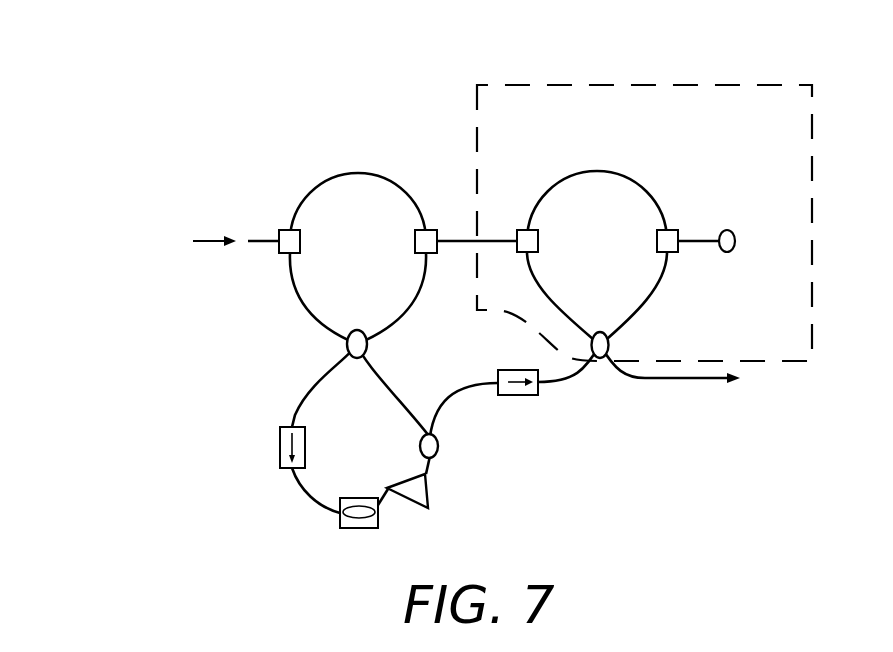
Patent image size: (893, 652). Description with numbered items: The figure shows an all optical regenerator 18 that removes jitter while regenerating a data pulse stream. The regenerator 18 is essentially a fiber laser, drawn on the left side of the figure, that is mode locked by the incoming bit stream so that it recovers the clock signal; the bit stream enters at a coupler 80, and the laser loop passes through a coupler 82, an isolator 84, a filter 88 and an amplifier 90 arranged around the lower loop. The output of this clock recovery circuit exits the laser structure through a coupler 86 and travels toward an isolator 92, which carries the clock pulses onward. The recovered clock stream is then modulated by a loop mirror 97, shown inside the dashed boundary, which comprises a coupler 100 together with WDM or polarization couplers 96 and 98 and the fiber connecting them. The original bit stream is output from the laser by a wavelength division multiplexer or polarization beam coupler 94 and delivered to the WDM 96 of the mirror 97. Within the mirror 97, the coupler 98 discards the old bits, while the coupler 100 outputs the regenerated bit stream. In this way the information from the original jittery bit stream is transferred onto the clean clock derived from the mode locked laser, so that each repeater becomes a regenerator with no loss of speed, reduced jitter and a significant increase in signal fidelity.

The all optical regenerator 18 is at (136, 386).
The input coupler 80 is at (286, 229).
The 0.5C fused fiber coupler 82 is at (347, 340).
The optical isolator 84 is at (280, 440).
The coupler 86 is at (434, 457).
The optical filter 88 is at (340, 518).
The optical amplifier 90 is at (403, 480).
The isolator 92 is at (512, 370).
The wavelength division multiplexer or polarization beam coupler 94 is at (428, 229).
The WDM coupler 96 is at (518, 230).
The loop mirror 97 is at (697, 102).
The coupler 98 is at (675, 230).
The coupler 100 is at (592, 340).